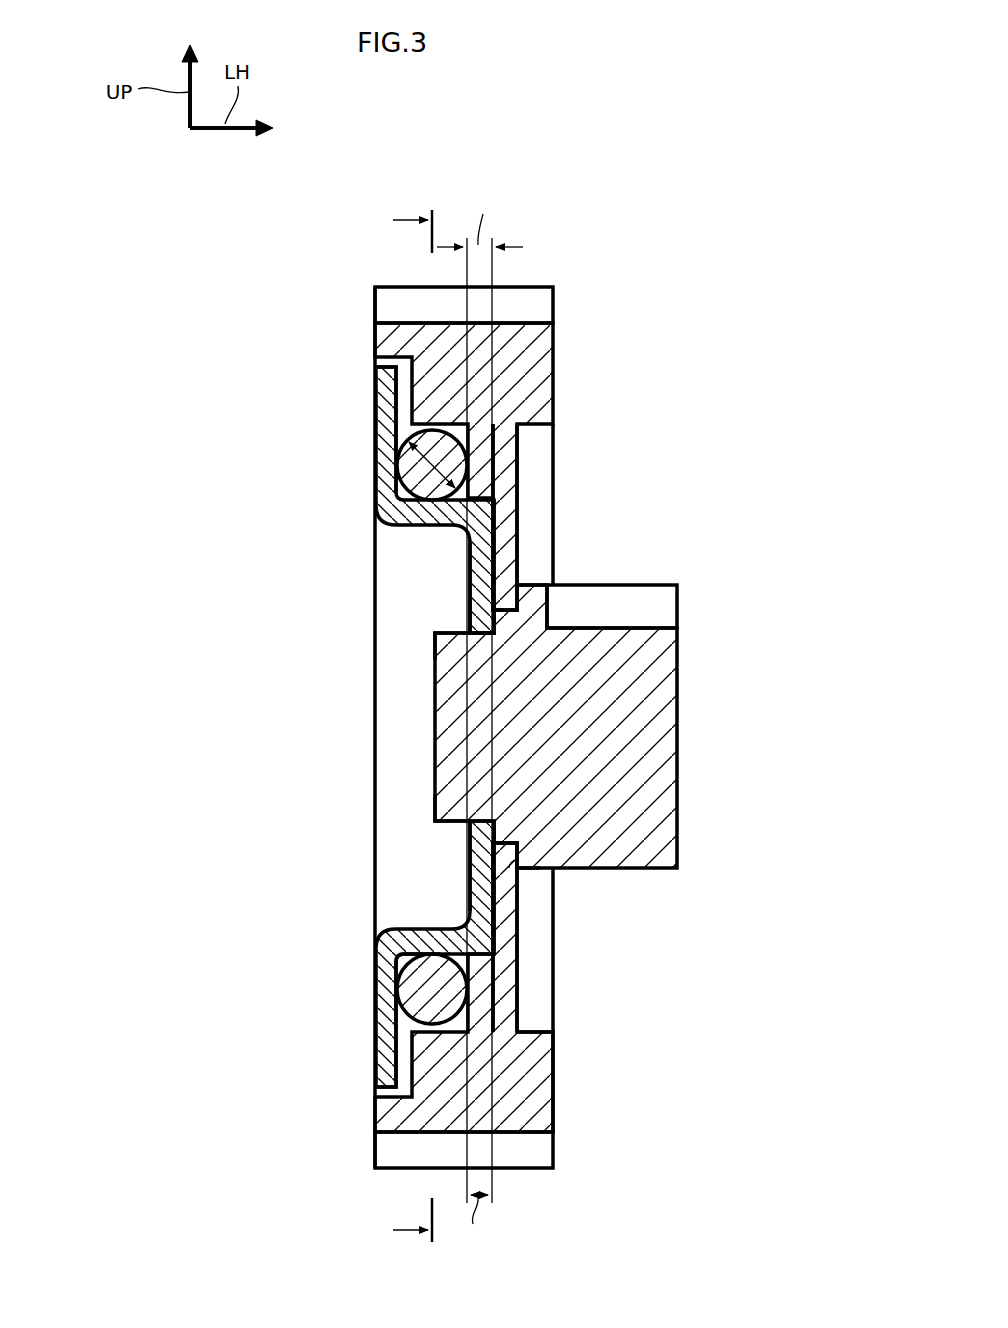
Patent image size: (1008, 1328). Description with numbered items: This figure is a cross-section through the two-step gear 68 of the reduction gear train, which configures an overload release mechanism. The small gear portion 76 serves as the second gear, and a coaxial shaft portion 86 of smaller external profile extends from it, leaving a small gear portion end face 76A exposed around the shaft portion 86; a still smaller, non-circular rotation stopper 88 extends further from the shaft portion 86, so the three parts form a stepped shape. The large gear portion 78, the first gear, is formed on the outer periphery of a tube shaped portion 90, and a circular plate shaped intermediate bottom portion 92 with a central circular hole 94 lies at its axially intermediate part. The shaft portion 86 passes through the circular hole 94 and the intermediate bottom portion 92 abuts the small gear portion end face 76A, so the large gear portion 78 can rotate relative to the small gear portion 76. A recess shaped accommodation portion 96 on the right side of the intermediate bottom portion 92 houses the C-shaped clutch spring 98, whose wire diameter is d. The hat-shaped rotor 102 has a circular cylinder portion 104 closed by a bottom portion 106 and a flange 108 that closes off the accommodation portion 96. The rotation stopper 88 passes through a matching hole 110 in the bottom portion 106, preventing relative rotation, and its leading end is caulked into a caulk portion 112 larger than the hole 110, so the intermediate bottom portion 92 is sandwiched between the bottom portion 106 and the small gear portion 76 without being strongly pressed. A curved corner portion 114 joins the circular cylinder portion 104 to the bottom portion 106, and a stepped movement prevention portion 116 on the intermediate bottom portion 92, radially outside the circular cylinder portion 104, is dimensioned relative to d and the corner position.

The two-step gear 68 is at (630, 228).
The small gear portion 76 is at (640, 585).
The small gear portion end face 76A is at (512, 871).
The large gear portion 78 is at (537, 1170).
The shaft portion 86 is at (510, 590).
The rotation stopper 88 is at (476, 620).
The tube shaped portion 90 is at (553, 1020).
The intermediate bottom portion 92 is at (520, 1005).
The circular hole 94 is at (547, 623).
The accommodation portion 96 is at (420, 1025).
The clutch spring 98 is at (415, 990).
The rotor 102 is at (356, 508).
The circular cylinder portion 104 is at (427, 932).
The bottom portion 106 is at (470, 585).
The flange 108 is at (373, 1062).
The hole 110 is at (446, 800).
The caulk portion 112 is at (462, 628).
The corner portion 114 is at (495, 948).
The movement prevention portion 116 is at (396, 432).
The wire diameter d is at (393, 473).